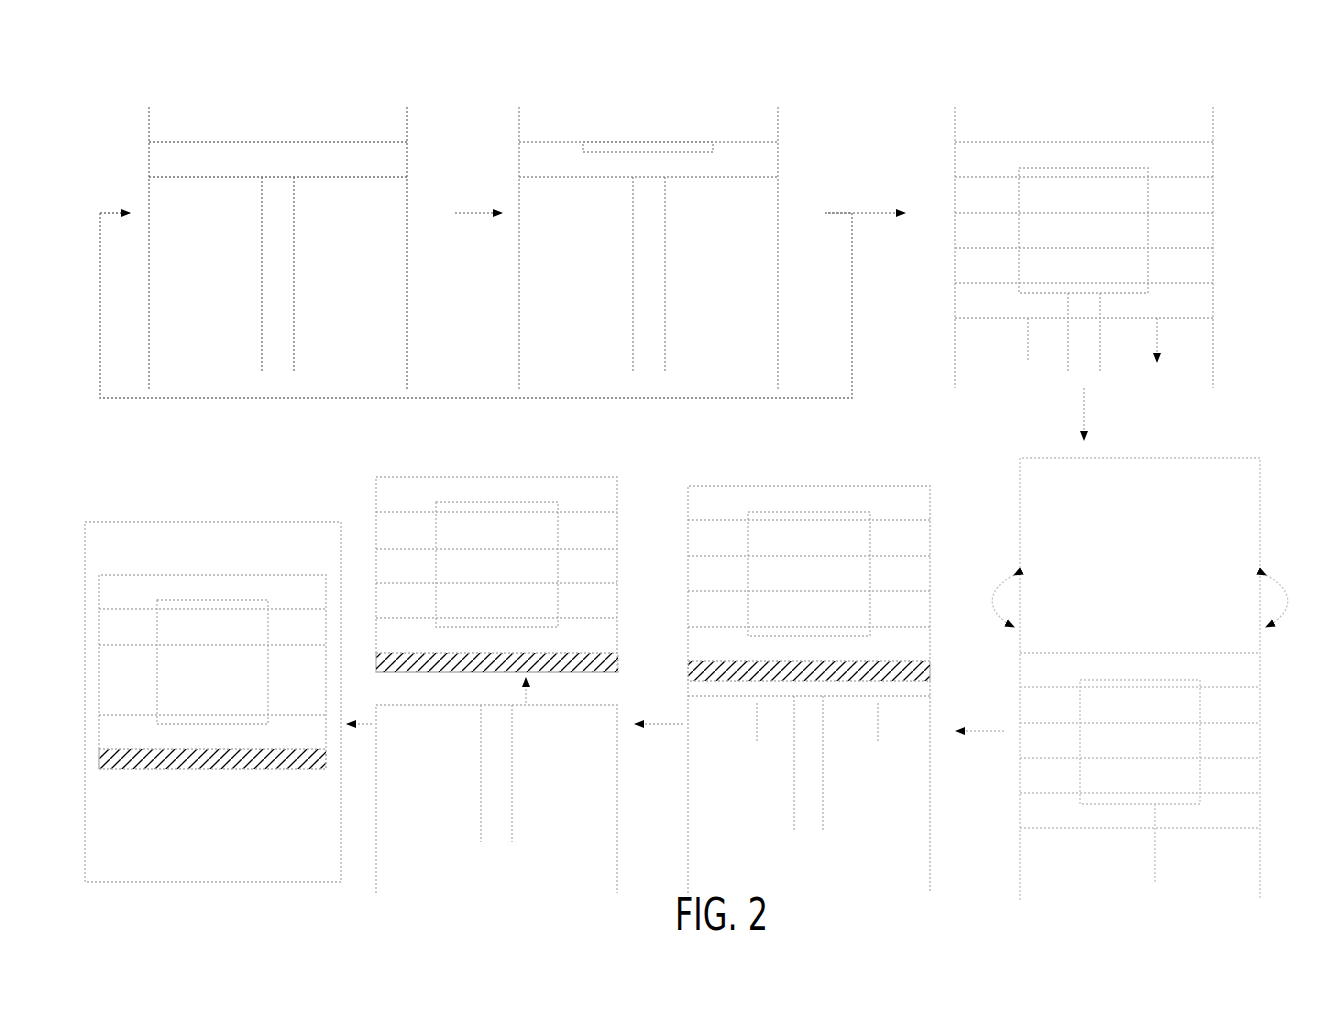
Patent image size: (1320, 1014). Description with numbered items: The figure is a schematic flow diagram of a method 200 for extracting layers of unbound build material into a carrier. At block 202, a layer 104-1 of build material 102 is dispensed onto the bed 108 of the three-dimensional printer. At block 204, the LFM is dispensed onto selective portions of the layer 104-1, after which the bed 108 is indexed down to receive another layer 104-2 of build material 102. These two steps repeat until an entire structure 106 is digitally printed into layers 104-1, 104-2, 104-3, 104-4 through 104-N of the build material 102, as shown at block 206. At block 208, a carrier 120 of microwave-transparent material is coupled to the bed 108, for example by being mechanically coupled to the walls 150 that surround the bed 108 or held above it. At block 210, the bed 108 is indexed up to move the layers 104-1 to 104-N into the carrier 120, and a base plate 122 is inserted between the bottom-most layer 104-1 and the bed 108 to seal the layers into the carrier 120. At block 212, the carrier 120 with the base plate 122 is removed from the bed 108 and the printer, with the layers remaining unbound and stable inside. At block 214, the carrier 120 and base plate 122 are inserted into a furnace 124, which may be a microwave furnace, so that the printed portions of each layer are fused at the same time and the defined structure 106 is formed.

The method 200 is at (239, 37).
The build material 102 is at (208, 148).
The first layer of build material 104-1 is at (390, 163).
The second layer of build material 104-2 is at (1198, 263).
The third layer of build material 104-3 is at (1198, 229).
The fourth layer of build material 104-4 is at (1198, 195).
The Nth layer of build material 104-N is at (1198, 162).
The structure 106 is at (647, 148).
The bed 108 is at (178, 178).
The carrier 120 is at (1190, 458).
The base plate 122 is at (918, 685).
The furnace 124 is at (229, 878).
The walls 150 is at (1020, 772).
The block 202 is at (158, 94).
The block 204 is at (527, 93).
The block 206 is at (940, 93).
The block 208 is at (1035, 450).
The block 210 is at (700, 446).
The block 212 is at (378, 446).
The block 214 is at (157, 488).